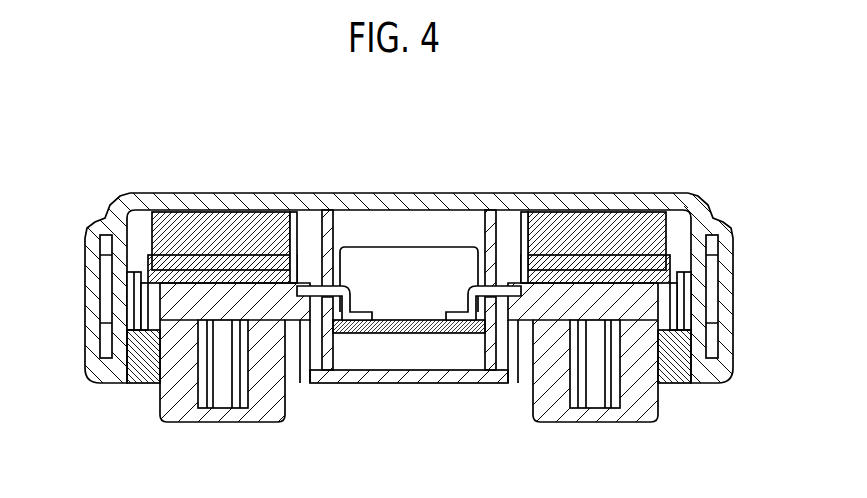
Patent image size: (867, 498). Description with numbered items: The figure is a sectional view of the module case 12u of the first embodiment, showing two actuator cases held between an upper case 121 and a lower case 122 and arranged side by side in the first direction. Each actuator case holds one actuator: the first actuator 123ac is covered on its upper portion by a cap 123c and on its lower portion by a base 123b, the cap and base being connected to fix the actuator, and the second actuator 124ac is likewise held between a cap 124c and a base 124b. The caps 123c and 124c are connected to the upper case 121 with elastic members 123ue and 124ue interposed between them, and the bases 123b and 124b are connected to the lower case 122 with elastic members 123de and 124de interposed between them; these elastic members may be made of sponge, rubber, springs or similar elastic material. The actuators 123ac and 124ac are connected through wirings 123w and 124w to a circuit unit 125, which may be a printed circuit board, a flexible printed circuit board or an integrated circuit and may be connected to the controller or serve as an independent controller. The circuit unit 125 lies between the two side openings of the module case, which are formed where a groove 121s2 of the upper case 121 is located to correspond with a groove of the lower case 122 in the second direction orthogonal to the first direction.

The module case 12u is at (765, 99).
The upper case 121 is at (300, 200).
The groove 121s2 is at (407, 245).
The lower case 122 is at (373, 385).
The elastic member 123ue is at (226, 245).
The wiring 123w is at (340, 287).
The cap 123c is at (103, 252).
The actuator 123ac is at (130, 293).
The elastic member 123de is at (130, 347).
The base 123b is at (135, 373).
The elastic member 124ue is at (594, 245).
The wiring 124w is at (478, 287).
The cap 124c is at (715, 252).
The actuator 124ac is at (688, 293).
The elastic member 124de is at (690, 347).
The base 124b is at (683, 373).
The circuit unit 125 is at (413, 335).